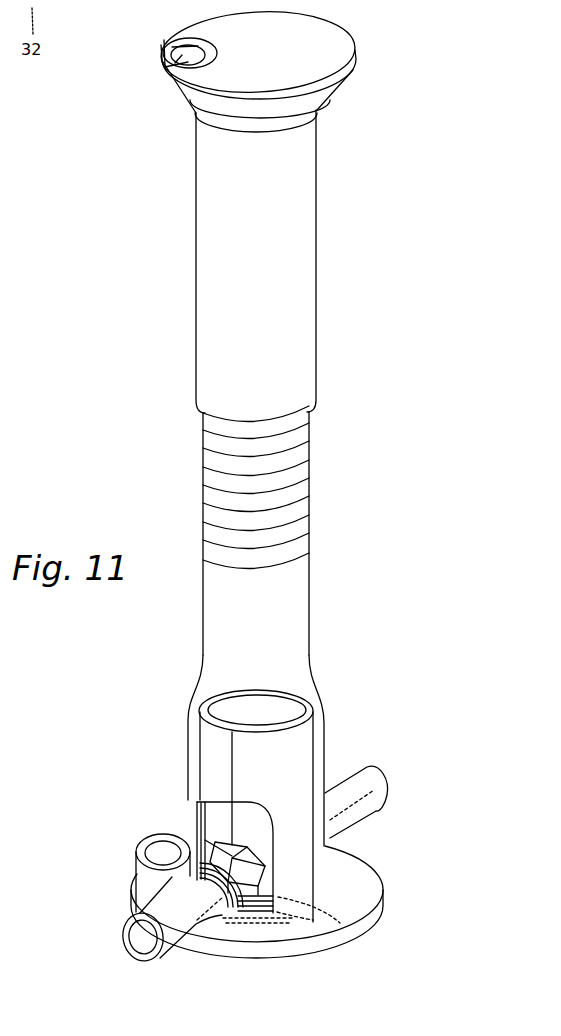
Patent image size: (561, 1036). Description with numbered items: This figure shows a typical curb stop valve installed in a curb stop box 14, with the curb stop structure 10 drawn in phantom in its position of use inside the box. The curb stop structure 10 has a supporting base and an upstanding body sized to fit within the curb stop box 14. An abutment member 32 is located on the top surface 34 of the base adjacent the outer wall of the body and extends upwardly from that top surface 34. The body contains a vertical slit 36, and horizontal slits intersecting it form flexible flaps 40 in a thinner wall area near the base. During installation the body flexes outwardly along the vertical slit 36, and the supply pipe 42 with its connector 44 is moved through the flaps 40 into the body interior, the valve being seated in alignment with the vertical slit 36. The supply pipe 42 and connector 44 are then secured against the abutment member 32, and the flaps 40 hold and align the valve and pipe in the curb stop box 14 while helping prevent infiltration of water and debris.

The curb stop structure 10 is at (302, 758).
The curb stop box 14 is at (297, 577).
The abutment member 32 is at (257, 915).
The top surface 34 is at (202, 925).
The vertical slit 36 is at (197, 802).
The flexible flap 40 is at (293, 862).
The supply pipe 42 is at (130, 892).
The connector 44 is at (193, 812).